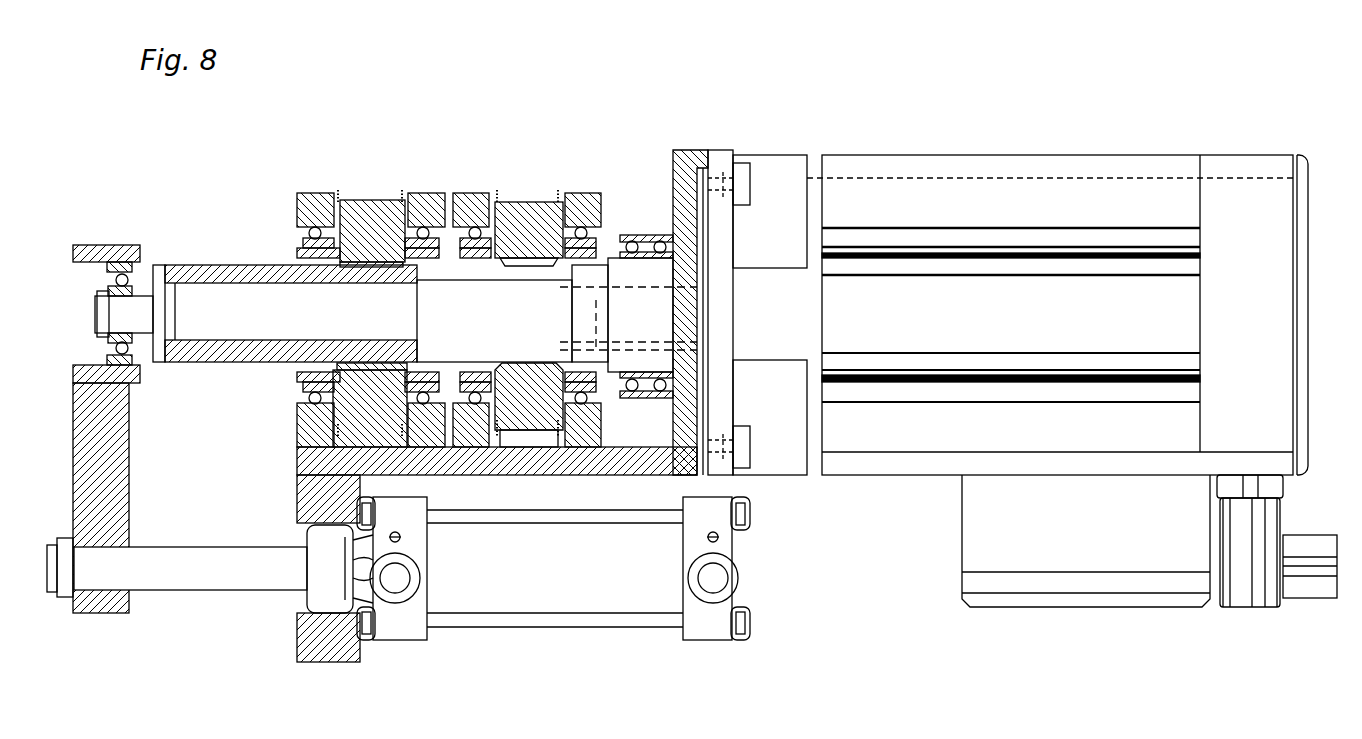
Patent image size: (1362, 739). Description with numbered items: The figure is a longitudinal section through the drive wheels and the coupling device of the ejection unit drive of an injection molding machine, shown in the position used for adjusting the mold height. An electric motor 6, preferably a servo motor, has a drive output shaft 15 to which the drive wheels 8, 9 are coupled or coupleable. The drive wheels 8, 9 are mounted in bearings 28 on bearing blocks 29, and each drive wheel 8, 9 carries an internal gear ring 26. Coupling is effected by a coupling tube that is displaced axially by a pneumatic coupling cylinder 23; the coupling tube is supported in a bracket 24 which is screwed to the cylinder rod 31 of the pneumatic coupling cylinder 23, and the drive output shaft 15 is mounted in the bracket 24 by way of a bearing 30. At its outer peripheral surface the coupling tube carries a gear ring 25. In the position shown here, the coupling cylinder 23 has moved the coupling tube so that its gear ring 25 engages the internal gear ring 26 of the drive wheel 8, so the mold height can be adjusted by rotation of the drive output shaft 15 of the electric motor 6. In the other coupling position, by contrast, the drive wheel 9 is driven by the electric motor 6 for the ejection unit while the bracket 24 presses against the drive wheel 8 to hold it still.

The electric motor 6 is at (1108, 210).
The drive wheel 8 is at (367, 228).
The drive wheel 9 is at (516, 240).
The drive output shaft 15 is at (485, 320).
The pneumatic coupling cylinder 23 is at (618, 582).
The bracket 24 is at (95, 503).
The gear ring 25 is at (400, 265).
The internal gear ring 26 is at (535, 262).
The bearings 28 is at (300, 252).
The bearing blocks 29 is at (585, 205).
The bearing 30 is at (137, 248).
The cylinder rod 31 is at (250, 565).